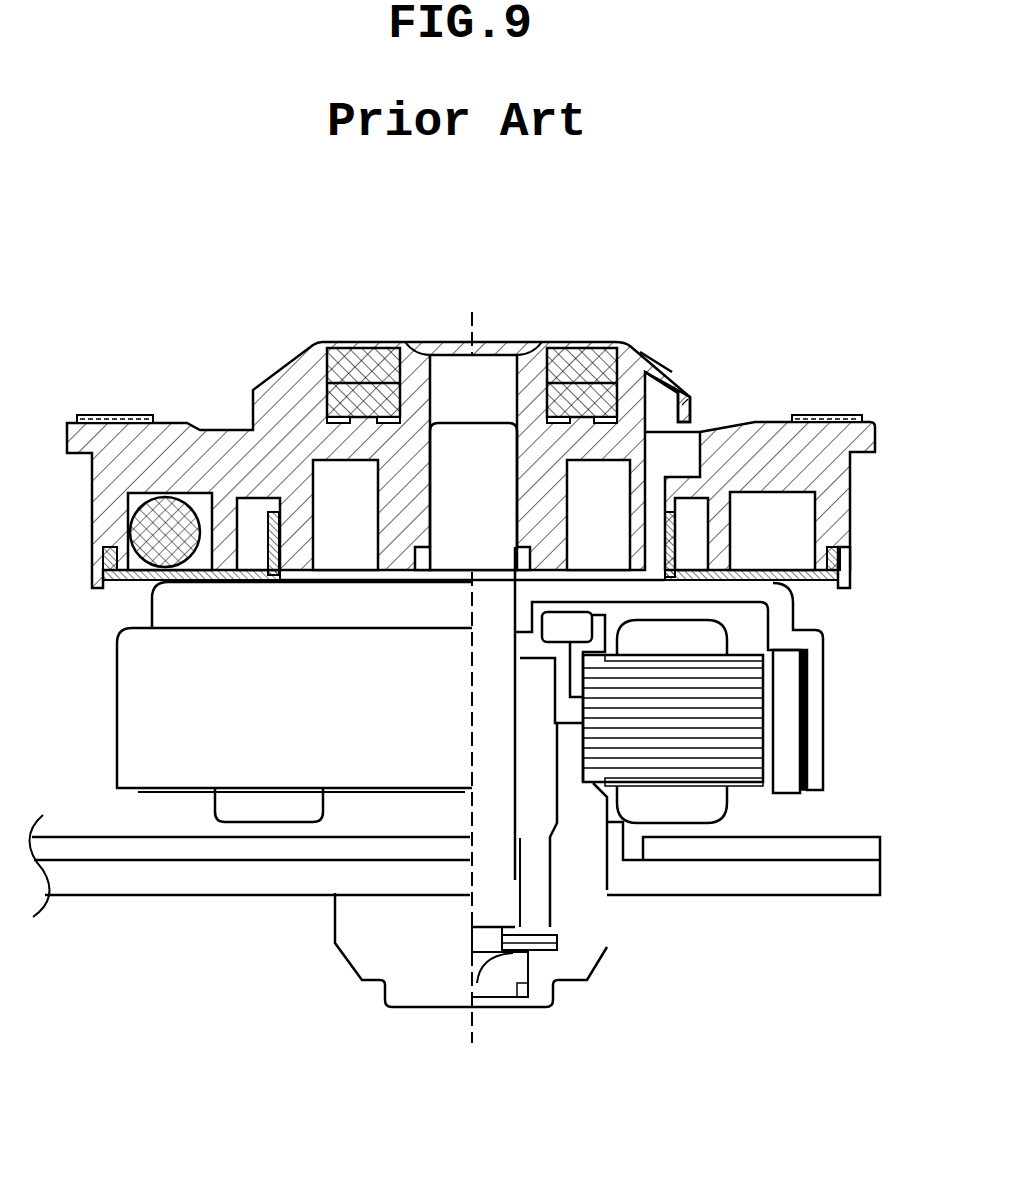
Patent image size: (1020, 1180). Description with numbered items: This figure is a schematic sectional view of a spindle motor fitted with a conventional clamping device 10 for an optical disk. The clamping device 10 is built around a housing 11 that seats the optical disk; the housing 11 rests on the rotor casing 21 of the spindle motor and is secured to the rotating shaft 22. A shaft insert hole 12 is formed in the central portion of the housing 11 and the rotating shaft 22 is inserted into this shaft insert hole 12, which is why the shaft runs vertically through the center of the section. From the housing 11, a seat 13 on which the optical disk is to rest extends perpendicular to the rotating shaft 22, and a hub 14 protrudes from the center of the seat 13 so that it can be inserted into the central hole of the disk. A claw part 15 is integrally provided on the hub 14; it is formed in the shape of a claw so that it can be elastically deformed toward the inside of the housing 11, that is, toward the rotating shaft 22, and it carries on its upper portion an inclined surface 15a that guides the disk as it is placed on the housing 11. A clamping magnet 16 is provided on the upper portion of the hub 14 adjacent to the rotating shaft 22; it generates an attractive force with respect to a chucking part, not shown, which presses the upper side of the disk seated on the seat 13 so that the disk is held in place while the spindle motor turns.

The clamping device 10 is at (151, 251).
The housing 11 is at (831, 455).
The shaft insert hole 12 is at (489, 382).
The seat 13 is at (767, 420).
The hub 14 is at (275, 370).
The claw part 15 is at (688, 376).
The inclined surface 15a is at (653, 350).
The clamping magnet 16 is at (584, 356).
The rotor casing 21 is at (784, 597).
The rotating shaft 22 is at (493, 887).